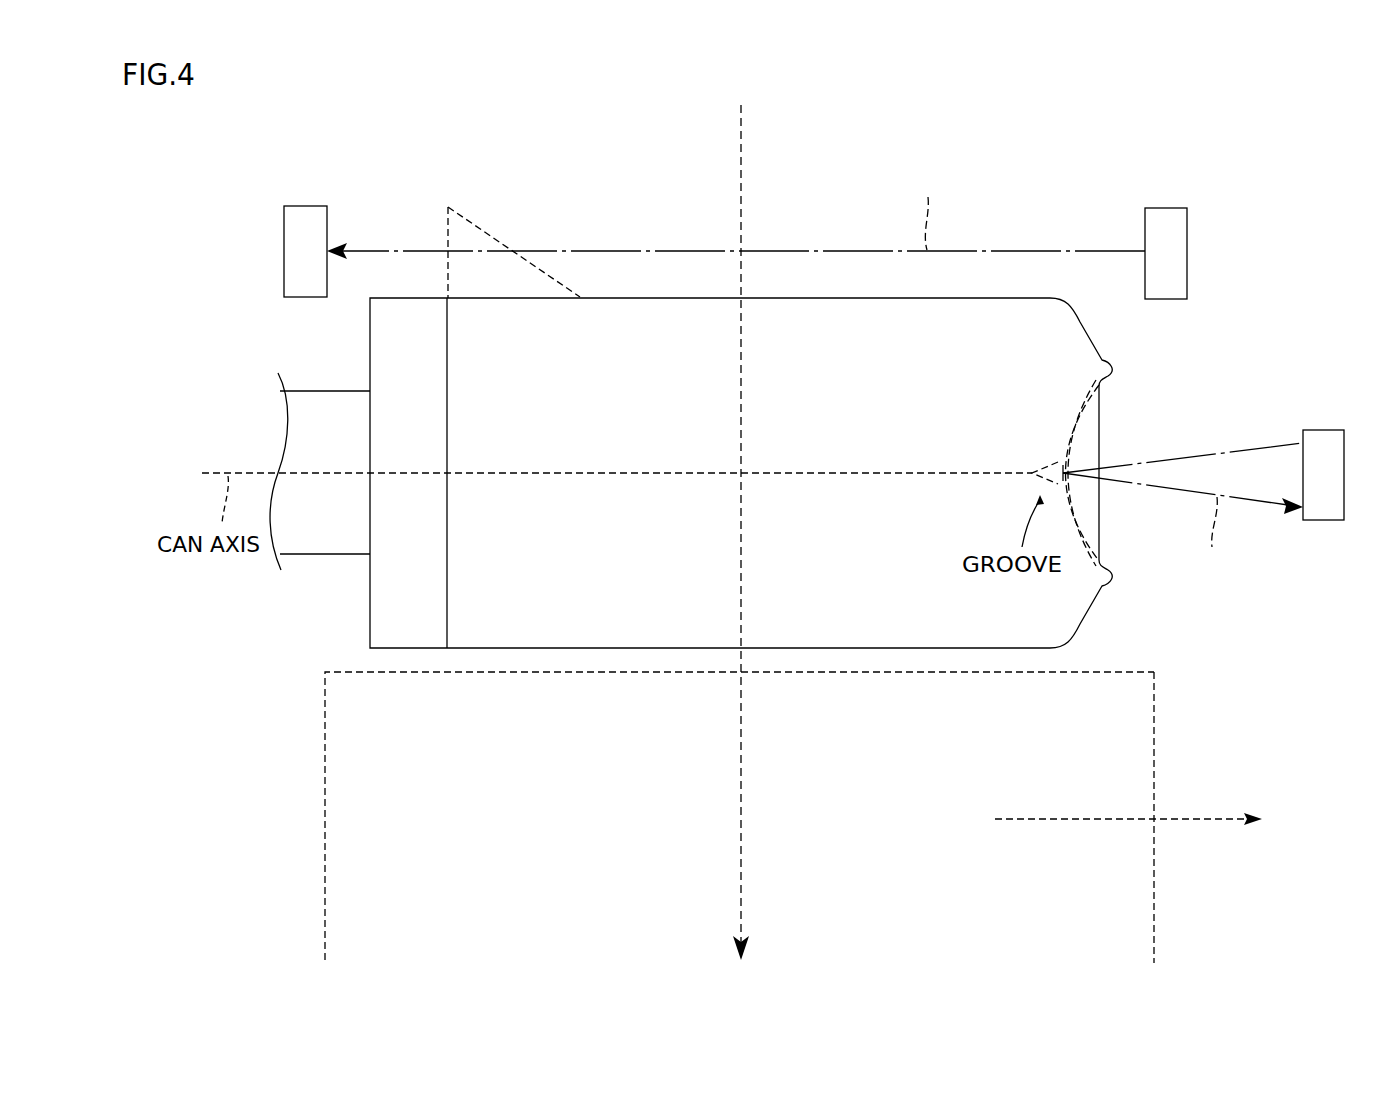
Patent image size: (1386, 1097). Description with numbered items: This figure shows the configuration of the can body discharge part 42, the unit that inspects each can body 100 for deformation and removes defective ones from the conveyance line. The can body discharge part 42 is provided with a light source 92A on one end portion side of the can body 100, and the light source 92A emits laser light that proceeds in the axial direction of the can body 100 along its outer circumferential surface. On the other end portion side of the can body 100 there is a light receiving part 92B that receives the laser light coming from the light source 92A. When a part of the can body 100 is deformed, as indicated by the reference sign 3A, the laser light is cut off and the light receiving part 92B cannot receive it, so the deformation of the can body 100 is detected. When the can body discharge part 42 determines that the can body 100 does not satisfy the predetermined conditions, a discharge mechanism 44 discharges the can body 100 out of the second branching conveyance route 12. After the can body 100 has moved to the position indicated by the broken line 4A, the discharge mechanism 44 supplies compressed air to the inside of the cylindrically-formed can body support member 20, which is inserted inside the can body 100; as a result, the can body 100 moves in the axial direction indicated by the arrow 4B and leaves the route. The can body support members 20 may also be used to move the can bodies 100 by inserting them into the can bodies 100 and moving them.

The can body 100 is at (845, 651).
The can body support member 20 is at (407, 648).
The deformed part of the can body 3A is at (492, 214).
The can body discharge part 42 is at (814, 318).
The light source 92A is at (1163, 208).
The light receiving part 92B is at (307, 206).
The second branching conveyance route 12 is at (743, 126).
The discharge mechanism 44 is at (295, 740).
The broken line 4A is at (1154, 716).
The arrow 4B is at (1130, 806).